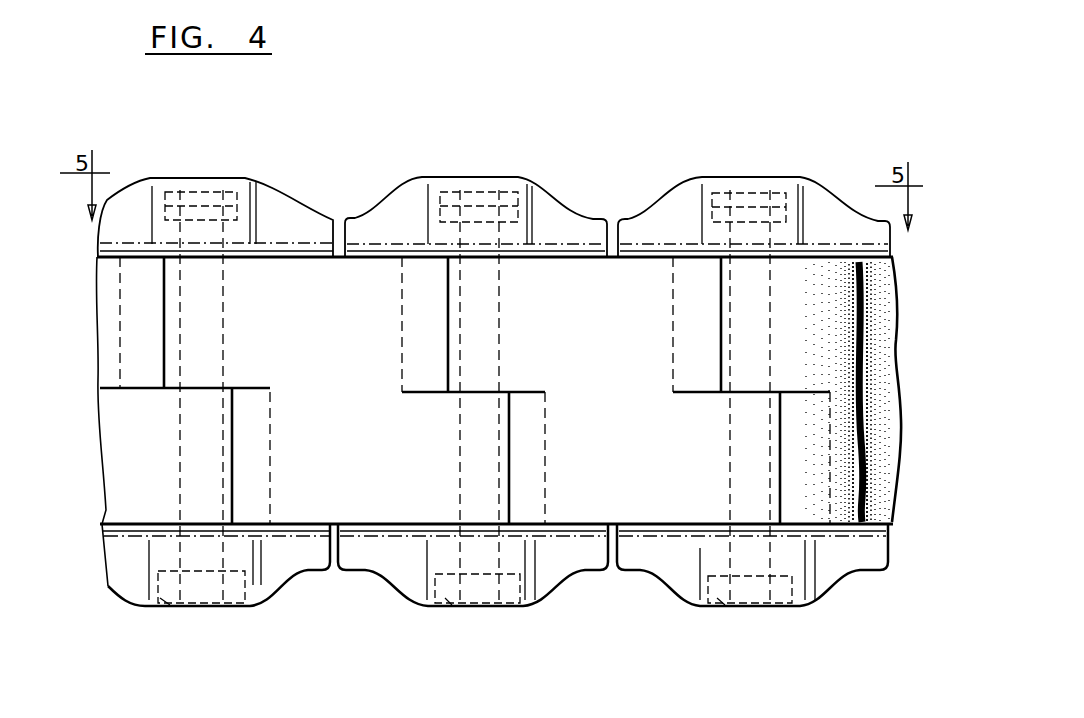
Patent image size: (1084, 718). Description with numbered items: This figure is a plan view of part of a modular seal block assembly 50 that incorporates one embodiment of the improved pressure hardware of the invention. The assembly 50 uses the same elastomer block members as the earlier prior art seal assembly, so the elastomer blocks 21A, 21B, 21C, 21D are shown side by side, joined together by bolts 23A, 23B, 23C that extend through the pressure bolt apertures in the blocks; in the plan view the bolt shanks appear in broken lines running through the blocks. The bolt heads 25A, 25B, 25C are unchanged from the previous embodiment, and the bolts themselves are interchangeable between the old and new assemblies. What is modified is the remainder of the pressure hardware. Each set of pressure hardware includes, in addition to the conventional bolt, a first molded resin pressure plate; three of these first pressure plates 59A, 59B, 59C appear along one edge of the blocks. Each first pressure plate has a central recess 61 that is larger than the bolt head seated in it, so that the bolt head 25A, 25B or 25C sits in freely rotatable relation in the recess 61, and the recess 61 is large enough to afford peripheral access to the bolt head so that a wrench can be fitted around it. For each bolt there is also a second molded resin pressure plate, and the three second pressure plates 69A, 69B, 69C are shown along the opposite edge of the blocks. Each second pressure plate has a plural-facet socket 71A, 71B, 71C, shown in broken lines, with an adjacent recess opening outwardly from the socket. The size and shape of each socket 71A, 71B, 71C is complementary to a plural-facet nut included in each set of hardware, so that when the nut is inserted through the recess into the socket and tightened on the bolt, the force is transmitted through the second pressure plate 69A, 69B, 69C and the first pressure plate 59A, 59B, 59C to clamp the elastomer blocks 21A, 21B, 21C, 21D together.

The seal block assembly 50 is at (621, 165).
The elastomer block 21A is at (128, 369).
The elastomer block 21B is at (386, 457).
The elastomer block 21C is at (641, 375).
The elastomer block 21D is at (869, 432).
The bolt 23A is at (224, 322).
The bolt 23B is at (490, 322).
The bolt 23C is at (772, 328).
The bolt head 25A is at (202, 595).
The bolt head 25B is at (480, 617).
The bolt head 25C is at (745, 597).
The first molded resin pressure plate 59A is at (268, 580).
The first molded resin pressure plate 59B is at (550, 578).
The first molded resin pressure plate 59C is at (825, 582).
The central recess 61 is at (160, 606).
The second molded resin pressure plate 69A is at (283, 218).
The second molded resin pressure plate 69B is at (560, 218).
The second molded resin pressure plate 69C is at (690, 204).
The plural-facet socket 71A is at (245, 192).
The plural-facet socket 71B is at (522, 192).
The plural-facet socket 71C is at (800, 195).